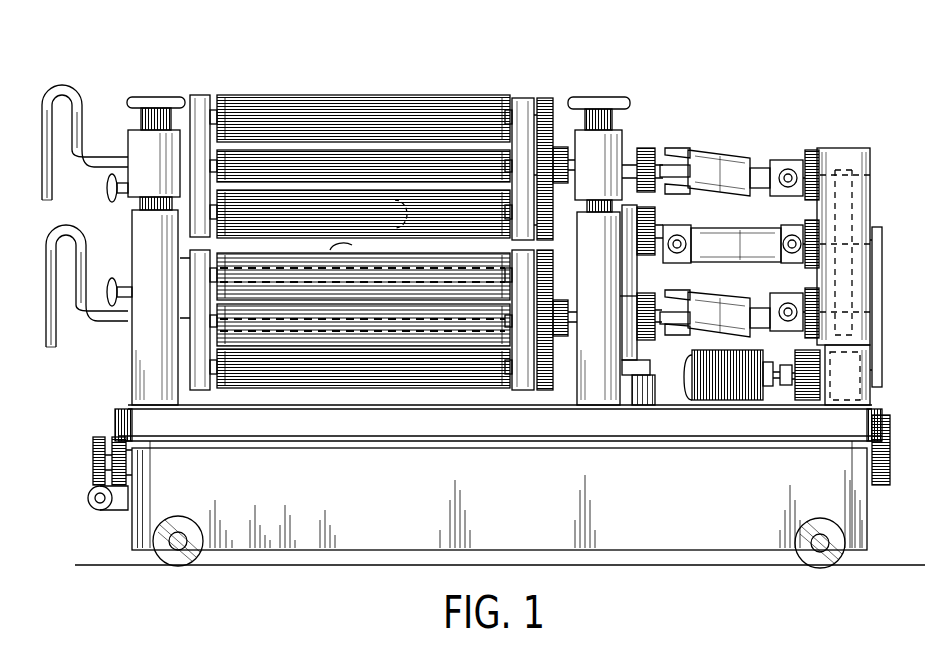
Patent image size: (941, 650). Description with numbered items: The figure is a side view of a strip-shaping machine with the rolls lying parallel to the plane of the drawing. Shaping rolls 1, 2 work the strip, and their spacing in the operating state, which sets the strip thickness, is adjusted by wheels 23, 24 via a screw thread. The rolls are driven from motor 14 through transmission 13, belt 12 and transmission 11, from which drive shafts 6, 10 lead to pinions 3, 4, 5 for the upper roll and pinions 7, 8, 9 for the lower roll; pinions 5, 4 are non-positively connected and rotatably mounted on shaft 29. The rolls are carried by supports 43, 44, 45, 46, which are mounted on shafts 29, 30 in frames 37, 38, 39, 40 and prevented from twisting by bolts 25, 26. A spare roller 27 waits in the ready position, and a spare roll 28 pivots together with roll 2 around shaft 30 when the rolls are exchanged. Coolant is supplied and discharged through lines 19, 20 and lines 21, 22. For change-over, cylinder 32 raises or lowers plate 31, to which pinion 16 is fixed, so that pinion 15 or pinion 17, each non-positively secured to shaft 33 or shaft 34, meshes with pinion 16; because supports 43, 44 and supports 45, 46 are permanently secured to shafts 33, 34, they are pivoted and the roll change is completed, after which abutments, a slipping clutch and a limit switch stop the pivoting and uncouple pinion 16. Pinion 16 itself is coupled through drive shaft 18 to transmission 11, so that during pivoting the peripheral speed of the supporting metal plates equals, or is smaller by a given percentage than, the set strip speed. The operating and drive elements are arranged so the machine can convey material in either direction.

The shaping roll 1 is at (215, 213).
The shaping roll 2 is at (200, 258).
The pinion 3 is at (548, 215).
The pinion 4 is at (550, 185).
The pinion 5 is at (556, 148).
The drive shaft 6 is at (760, 165).
The pinion 7 is at (553, 270).
The pinion 8 is at (525, 385).
The pinion 9 is at (560, 336).
The drive shaft 10 is at (805, 372).
The transmission 11 is at (857, 148).
The belt 12 is at (880, 252).
The transmission 13 is at (852, 372).
The motor 14 is at (735, 402).
The pinion 15 is at (655, 160).
The pinion 16 is at (652, 232).
The pinion 17 is at (640, 318).
The drive shaft 18 is at (735, 245).
The coolant line 19 is at (712, 165).
The coolant line 20 is at (700, 320).
The coolant line 21 is at (60, 97).
The coolant line 22 is at (64, 243).
The adjusting wheel 23 is at (150, 98).
The adjusting wheel 24 is at (590, 98).
The bolt 25 is at (107, 188).
The bolt 26 is at (112, 278).
The roller 27 is at (262, 100).
The roll 28 is at (247, 395).
The shaft 29 is at (320, 165).
The shaft 30 is at (210, 318).
The plate 31 is at (622, 298).
The cylinder 32 is at (645, 406).
The shaft 33 is at (640, 155).
The shaft 34 is at (630, 280).
The frame 37 is at (140, 142).
The frame 38 is at (598, 145).
The frame 39 is at (150, 380).
The frame 40 is at (590, 392).
The support 43 is at (200, 95).
The support 44 is at (520, 100).
The support 45 is at (195, 355).
The support 46 is at (500, 274).